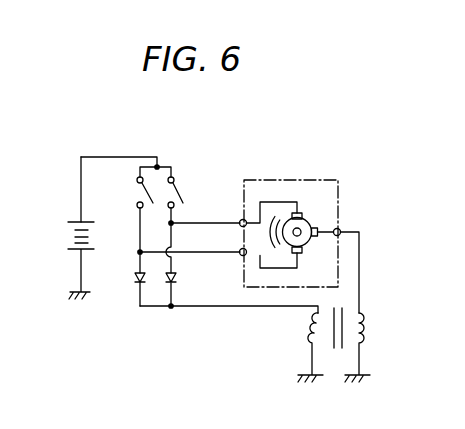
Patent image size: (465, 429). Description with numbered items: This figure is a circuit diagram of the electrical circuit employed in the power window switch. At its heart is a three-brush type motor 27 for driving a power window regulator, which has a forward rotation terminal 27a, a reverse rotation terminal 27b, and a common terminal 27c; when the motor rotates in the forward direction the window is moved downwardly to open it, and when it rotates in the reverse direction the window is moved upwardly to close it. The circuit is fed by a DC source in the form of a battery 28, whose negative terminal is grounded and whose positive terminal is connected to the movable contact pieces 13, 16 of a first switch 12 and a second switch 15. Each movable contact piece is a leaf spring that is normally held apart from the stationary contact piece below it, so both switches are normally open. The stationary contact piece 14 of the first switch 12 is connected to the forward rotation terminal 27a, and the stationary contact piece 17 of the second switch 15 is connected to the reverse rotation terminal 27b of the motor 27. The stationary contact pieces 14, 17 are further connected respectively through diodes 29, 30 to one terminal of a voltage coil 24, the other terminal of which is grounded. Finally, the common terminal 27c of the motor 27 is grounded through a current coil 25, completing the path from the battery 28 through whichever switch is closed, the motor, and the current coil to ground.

The first switch 12 is at (183, 182).
The movable contact piece 13 is at (183, 192).
The stationary contact piece 14 is at (178, 207).
The second switch 15 is at (138, 187).
The movable contact piece 16 is at (137, 207).
The stationary contact piece 17 is at (135, 222).
The voltage coil 24 is at (306, 332).
The current coil 25 is at (370, 326).
The three-brush type motor 27 is at (302, 180).
The forward rotation terminal 27a is at (242, 219).
The reverse rotation terminal 27b is at (243, 257).
The common terminal 27c is at (342, 230).
The battery 28 is at (62, 238).
The diode 29 is at (175, 278).
The diode 30 is at (136, 282).